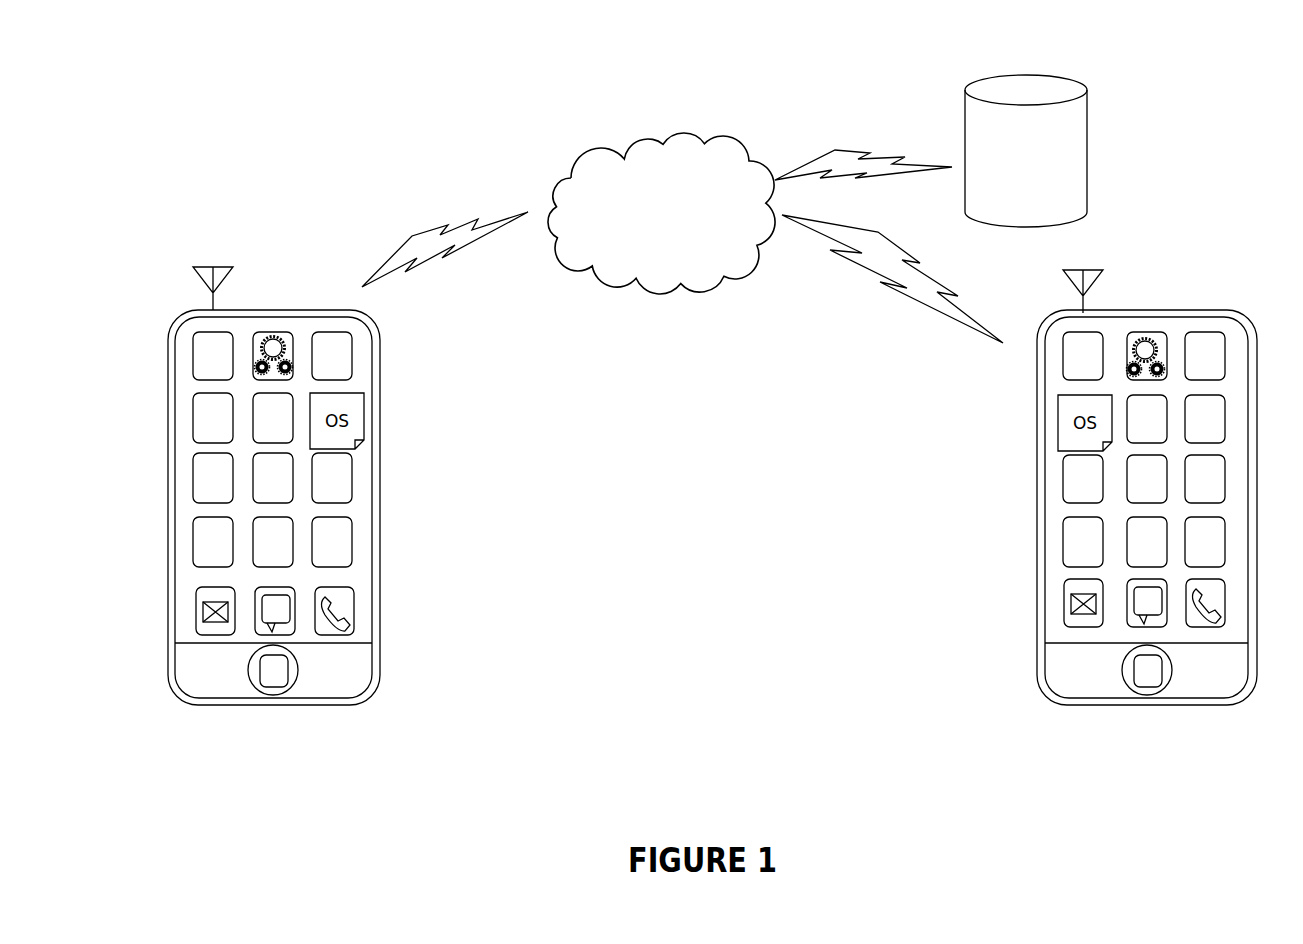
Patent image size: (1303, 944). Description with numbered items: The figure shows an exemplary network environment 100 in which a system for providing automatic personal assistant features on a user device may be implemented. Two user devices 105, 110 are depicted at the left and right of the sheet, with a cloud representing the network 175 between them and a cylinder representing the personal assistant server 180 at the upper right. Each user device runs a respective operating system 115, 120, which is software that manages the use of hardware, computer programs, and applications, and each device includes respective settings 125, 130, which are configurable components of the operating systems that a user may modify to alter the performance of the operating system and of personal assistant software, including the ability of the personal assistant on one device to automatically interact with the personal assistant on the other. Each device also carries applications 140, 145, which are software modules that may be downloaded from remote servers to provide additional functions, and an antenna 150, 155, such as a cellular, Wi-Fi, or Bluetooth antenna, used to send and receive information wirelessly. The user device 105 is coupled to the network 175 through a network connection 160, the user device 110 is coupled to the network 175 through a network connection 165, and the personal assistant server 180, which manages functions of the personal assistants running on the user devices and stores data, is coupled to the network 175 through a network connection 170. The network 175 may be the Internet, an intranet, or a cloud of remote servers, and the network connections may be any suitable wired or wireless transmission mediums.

The network environment 100 is at (725, 70).
The user device 105 is at (348, 480).
The user device 110 is at (1071, 499).
The operating system 115 is at (385, 421).
The operating system 120 is at (1031, 423).
The settings 125 is at (293, 357).
The settings 130 is at (1125, 358).
The applications 140 is at (361, 483).
The applications 145 is at (1055, 479).
The antenna 150 is at (248, 268).
The antenna 155 is at (1115, 272).
The network connection 160 is at (445, 253).
The network connection 165 is at (892, 279).
The network connection 170 is at (863, 146).
The network 175 is at (661, 213).
The personal assistant server 180 is at (1026, 151).